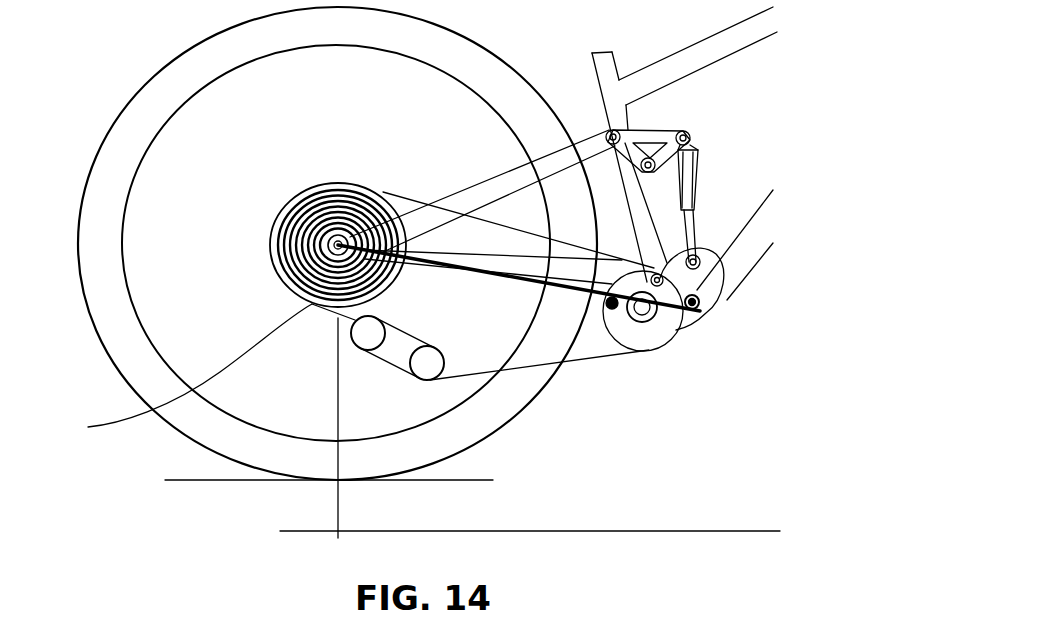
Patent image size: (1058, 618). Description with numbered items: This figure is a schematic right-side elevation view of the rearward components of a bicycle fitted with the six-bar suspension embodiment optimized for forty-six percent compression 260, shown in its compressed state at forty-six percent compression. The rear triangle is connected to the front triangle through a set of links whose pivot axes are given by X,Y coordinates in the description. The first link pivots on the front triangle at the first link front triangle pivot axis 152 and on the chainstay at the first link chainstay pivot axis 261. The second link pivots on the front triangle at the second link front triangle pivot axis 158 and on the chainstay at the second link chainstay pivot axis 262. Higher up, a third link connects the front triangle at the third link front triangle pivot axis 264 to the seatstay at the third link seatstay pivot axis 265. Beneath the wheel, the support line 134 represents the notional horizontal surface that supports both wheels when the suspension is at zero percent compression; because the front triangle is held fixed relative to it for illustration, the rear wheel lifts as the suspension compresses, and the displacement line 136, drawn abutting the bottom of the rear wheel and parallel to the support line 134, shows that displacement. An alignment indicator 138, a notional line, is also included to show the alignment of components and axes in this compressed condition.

The 6-bar suspension embodiment optimized for 46% compression 260 is at (549, 66).
The third link seatstay pivot axis 265 is at (624, 128).
The third link front triangle pivot axis 264 is at (660, 178).
The second link chainstay pivot axis 262 is at (745, 262).
The first link chainstay pivot axis 261 is at (718, 306).
The first link front triangle pivot axis 152 is at (681, 323).
The second link front triangle pivot axis 158 is at (620, 338).
The alignment indicator 138 is at (522, 298).
The displacement line 136 is at (493, 480).
The support line 134 is at (680, 531).